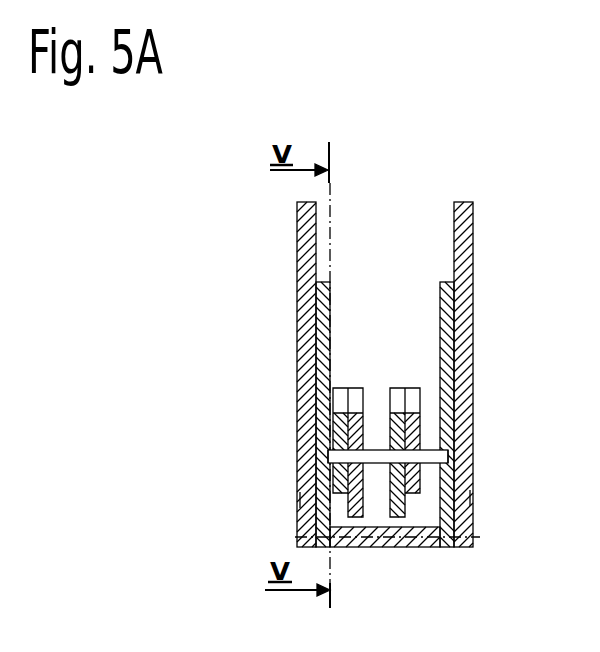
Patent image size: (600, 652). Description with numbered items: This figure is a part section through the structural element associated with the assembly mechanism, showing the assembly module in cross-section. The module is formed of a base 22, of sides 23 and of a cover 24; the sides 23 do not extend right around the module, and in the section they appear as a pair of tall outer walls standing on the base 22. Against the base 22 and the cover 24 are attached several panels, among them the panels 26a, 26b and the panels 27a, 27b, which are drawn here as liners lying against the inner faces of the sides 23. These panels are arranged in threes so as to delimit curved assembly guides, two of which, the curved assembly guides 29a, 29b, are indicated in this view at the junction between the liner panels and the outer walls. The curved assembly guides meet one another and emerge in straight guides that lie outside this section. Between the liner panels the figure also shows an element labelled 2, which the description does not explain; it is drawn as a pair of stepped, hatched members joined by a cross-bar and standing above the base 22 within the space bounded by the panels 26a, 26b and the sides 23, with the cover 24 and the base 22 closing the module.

The electrode assembly 2 is at (378, 382).
The base 22 is at (468, 323).
The sides 23 is at (418, 547).
The cover 24 is at (297, 350).
The panel 26a is at (447, 325).
The panel 26b is at (330, 343).
The panel 27a is at (458, 498).
The panel 27b is at (300, 500).
The curved assembly guide 29a is at (472, 440).
The curved assembly guide 29b is at (300, 462).